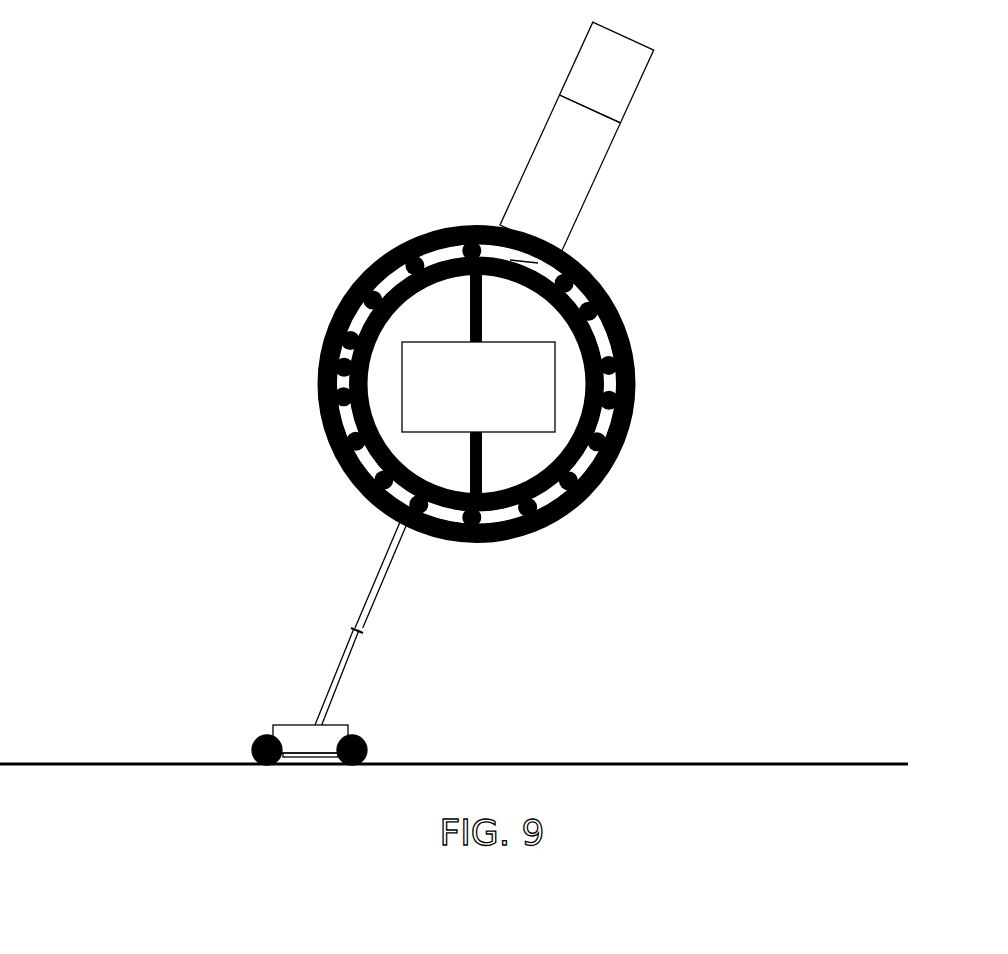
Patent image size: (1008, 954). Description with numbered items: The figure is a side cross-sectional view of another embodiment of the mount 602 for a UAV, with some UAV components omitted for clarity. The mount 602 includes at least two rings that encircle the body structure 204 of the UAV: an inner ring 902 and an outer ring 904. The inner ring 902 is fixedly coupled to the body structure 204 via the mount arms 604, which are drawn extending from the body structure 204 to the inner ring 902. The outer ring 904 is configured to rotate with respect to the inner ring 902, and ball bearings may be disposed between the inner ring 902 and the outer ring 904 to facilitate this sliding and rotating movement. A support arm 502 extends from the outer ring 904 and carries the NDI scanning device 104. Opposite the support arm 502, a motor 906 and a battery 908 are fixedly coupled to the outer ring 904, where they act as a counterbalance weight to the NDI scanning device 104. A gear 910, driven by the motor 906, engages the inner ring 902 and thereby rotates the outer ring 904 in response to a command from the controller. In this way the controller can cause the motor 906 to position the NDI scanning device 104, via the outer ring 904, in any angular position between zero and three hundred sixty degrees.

The NDI scanning device 104 is at (350, 727).
The body structure 204 is at (478, 387).
The support arm 502 is at (338, 667).
The mount 602 is at (425, 384).
The mount arms 604 is at (470, 328).
The inner ring 902 is at (578, 338).
The outer ring 904 is at (628, 337).
The motor 906 is at (560, 174).
The battery 908 is at (607, 72).
The gear 910 is at (567, 250).